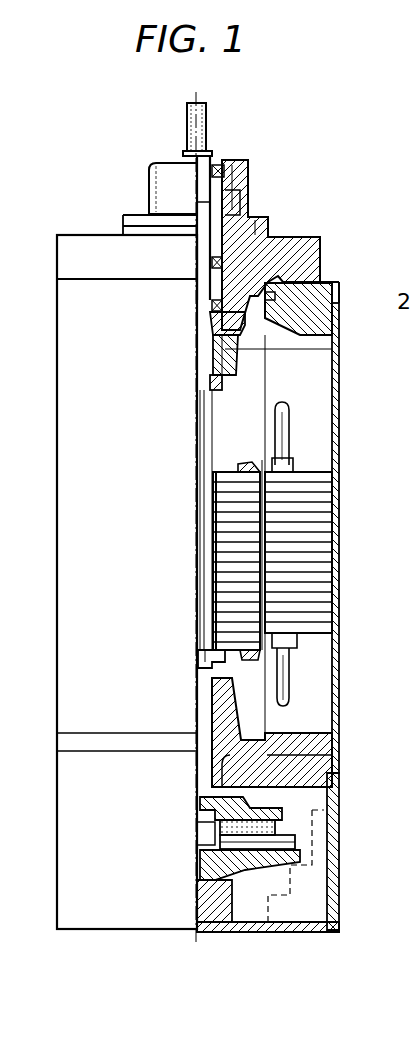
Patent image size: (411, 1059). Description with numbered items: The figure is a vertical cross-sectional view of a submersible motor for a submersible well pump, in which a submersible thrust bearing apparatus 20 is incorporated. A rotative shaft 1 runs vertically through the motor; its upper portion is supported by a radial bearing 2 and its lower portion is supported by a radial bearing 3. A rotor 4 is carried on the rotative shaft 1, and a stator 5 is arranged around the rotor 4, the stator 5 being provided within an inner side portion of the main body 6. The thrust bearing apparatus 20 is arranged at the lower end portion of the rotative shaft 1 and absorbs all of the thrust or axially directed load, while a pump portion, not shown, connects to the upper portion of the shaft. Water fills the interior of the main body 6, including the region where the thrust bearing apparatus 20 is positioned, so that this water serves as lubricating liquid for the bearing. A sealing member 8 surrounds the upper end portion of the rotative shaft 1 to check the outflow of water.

The rotative shaft 1 is at (210, 668).
The radial bearing 2 is at (332, 349).
The radial bearing 3 is at (226, 700).
The rotor 4 is at (240, 562).
The stator 5 is at (330, 512).
The main body 6 is at (339, 444).
The sealing member 8 is at (273, 290).
The submersible thrust bearing apparatus 20 is at (302, 834).